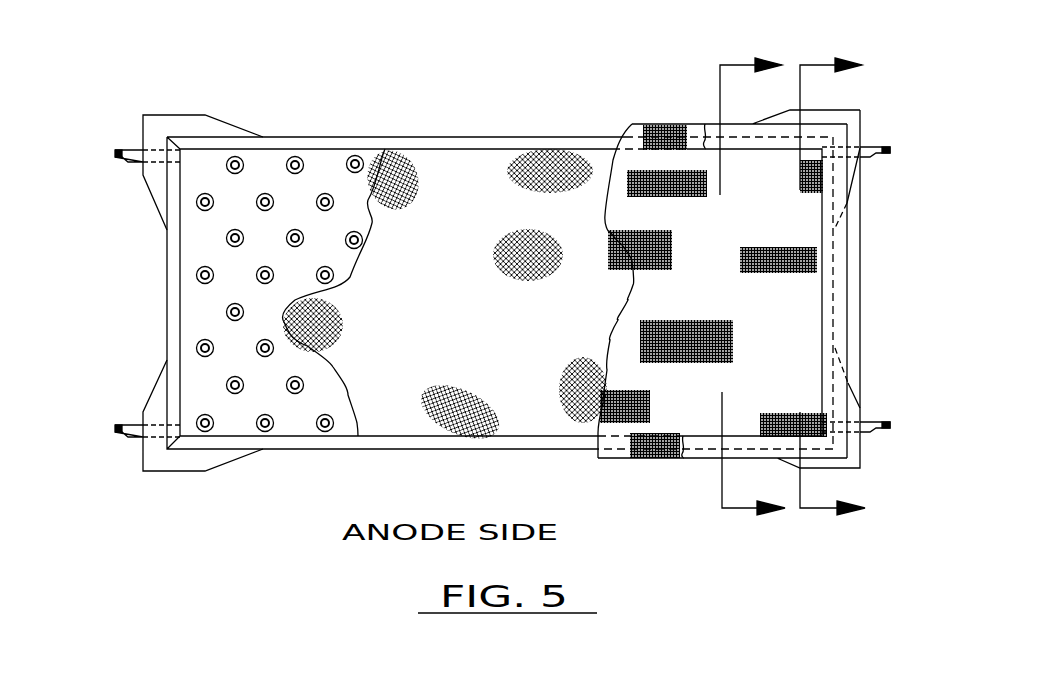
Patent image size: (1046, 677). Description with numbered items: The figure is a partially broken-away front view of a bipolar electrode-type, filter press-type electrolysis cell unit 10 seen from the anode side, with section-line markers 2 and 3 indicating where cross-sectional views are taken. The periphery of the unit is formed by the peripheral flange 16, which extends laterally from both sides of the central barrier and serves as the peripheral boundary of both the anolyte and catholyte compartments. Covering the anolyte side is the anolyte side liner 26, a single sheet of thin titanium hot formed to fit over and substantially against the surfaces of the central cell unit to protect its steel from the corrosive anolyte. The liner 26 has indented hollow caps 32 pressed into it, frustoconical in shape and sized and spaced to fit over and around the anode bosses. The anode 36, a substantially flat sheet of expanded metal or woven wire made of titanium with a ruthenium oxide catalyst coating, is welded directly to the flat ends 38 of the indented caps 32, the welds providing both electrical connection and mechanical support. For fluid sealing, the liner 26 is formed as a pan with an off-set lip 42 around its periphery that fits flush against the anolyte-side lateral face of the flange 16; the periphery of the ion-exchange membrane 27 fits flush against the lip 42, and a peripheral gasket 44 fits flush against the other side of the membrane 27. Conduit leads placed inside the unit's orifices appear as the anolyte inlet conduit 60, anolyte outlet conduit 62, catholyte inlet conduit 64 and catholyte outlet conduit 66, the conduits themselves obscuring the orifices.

The cell unit 10 is at (476, 58).
The peripheral flange 16 is at (520, 135).
The anolyte side liner 26 is at (322, 175).
The ion-exchange membrane 27 is at (655, 158).
The indented hollow caps 32 is at (205, 345).
The anode 36 is at (443, 187).
The flat ends of indented caps 38 is at (295, 167).
The off-set lip 42 is at (173, 268).
The peripheral gasket 44 is at (848, 307).
The anolyte inlet conduit 60 is at (113, 428).
The anolyte outlet conduit 62 is at (893, 148).
The catholyte inlet conduit 64 is at (890, 427).
The catholyte outlet conduit 66 is at (113, 153).
The section line 2- 2 is at (832, 287).
The section line 3- 3 is at (752, 287).